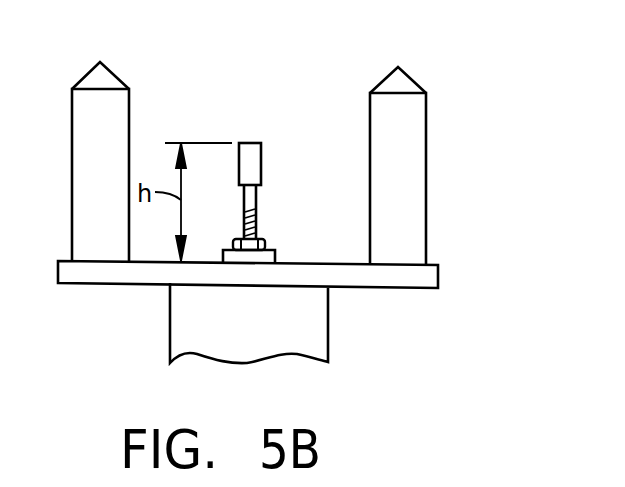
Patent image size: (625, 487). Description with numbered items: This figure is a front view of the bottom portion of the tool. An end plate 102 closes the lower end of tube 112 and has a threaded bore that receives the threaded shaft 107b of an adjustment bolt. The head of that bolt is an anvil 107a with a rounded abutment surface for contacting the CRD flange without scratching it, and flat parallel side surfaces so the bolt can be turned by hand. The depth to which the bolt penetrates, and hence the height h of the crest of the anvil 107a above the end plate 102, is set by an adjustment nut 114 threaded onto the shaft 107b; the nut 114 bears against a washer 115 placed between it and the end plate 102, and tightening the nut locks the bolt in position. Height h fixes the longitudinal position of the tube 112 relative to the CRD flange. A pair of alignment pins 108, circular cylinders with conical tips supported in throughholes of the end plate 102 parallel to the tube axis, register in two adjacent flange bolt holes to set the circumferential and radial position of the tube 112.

The end plate 102 is at (438, 277).
The tube 112 is at (328, 308).
The alignment pins 108 is at (426, 120).
The anvil 107a is at (238, 170).
The threaded shaft 107b is at (260, 197).
The adjustment nut 114 is at (267, 241).
The washer 115 is at (272, 255).